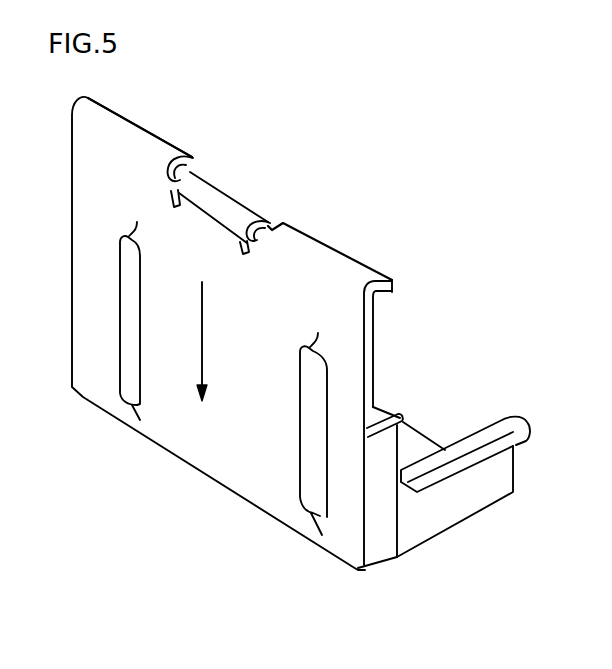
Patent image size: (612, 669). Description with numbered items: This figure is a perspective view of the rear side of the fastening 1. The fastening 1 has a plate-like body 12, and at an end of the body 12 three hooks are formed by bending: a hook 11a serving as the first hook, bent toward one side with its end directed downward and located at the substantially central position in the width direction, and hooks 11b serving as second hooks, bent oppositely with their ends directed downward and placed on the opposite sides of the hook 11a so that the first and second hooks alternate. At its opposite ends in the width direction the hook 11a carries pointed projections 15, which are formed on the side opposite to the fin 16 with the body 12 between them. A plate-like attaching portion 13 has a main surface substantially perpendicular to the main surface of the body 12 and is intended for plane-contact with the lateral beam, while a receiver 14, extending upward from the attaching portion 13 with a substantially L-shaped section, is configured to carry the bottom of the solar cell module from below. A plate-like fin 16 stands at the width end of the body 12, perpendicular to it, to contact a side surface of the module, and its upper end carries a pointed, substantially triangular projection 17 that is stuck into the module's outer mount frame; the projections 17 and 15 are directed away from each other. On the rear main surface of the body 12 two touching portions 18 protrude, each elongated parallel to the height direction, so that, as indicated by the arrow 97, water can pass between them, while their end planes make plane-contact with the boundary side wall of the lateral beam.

The fastening 1 is at (458, 196).
The hook 11a is at (222, 205).
The hook 11b is at (143, 145).
The body 12 is at (223, 438).
The attaching portion 13 is at (412, 443).
The receiver 14 is at (462, 448).
The projection 15 is at (168, 203).
The fin 16 is at (377, 517).
The projection 17 is at (404, 414).
The touching portion 18 is at (118, 373).
The arrow 97 is at (202, 352).